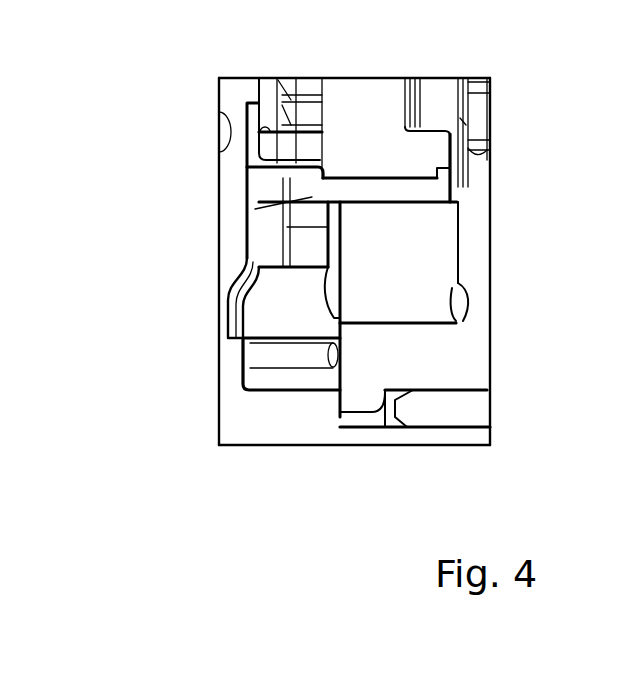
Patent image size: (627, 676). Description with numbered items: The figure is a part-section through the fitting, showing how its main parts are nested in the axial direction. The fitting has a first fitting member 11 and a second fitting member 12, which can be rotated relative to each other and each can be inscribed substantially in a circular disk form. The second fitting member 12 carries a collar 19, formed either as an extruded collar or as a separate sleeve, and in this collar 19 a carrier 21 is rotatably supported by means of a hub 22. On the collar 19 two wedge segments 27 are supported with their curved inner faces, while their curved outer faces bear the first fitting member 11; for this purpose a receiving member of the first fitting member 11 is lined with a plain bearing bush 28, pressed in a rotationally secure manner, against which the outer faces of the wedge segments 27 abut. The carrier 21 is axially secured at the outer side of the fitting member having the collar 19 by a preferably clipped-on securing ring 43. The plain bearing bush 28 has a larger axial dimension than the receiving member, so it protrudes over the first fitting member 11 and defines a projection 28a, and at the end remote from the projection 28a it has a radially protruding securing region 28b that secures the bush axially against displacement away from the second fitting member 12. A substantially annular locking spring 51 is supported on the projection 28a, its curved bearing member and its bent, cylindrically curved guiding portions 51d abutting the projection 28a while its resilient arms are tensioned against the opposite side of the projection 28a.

The first fitting member 11 is at (383, 77).
The second fitting member 12 is at (490, 328).
The collar 19 is at (407, 363).
The carrier 21 is at (219, 410).
The hub 22 is at (395, 438).
The wedge segments 27 is at (430, 232).
The plain bearing bush 28 is at (397, 178).
The projection 28a is at (310, 197).
The securing region 28b is at (443, 184).
The securing ring 43 is at (478, 413).
The locking spring 51 is at (245, 133).
The guiding portions 51d is at (277, 172).